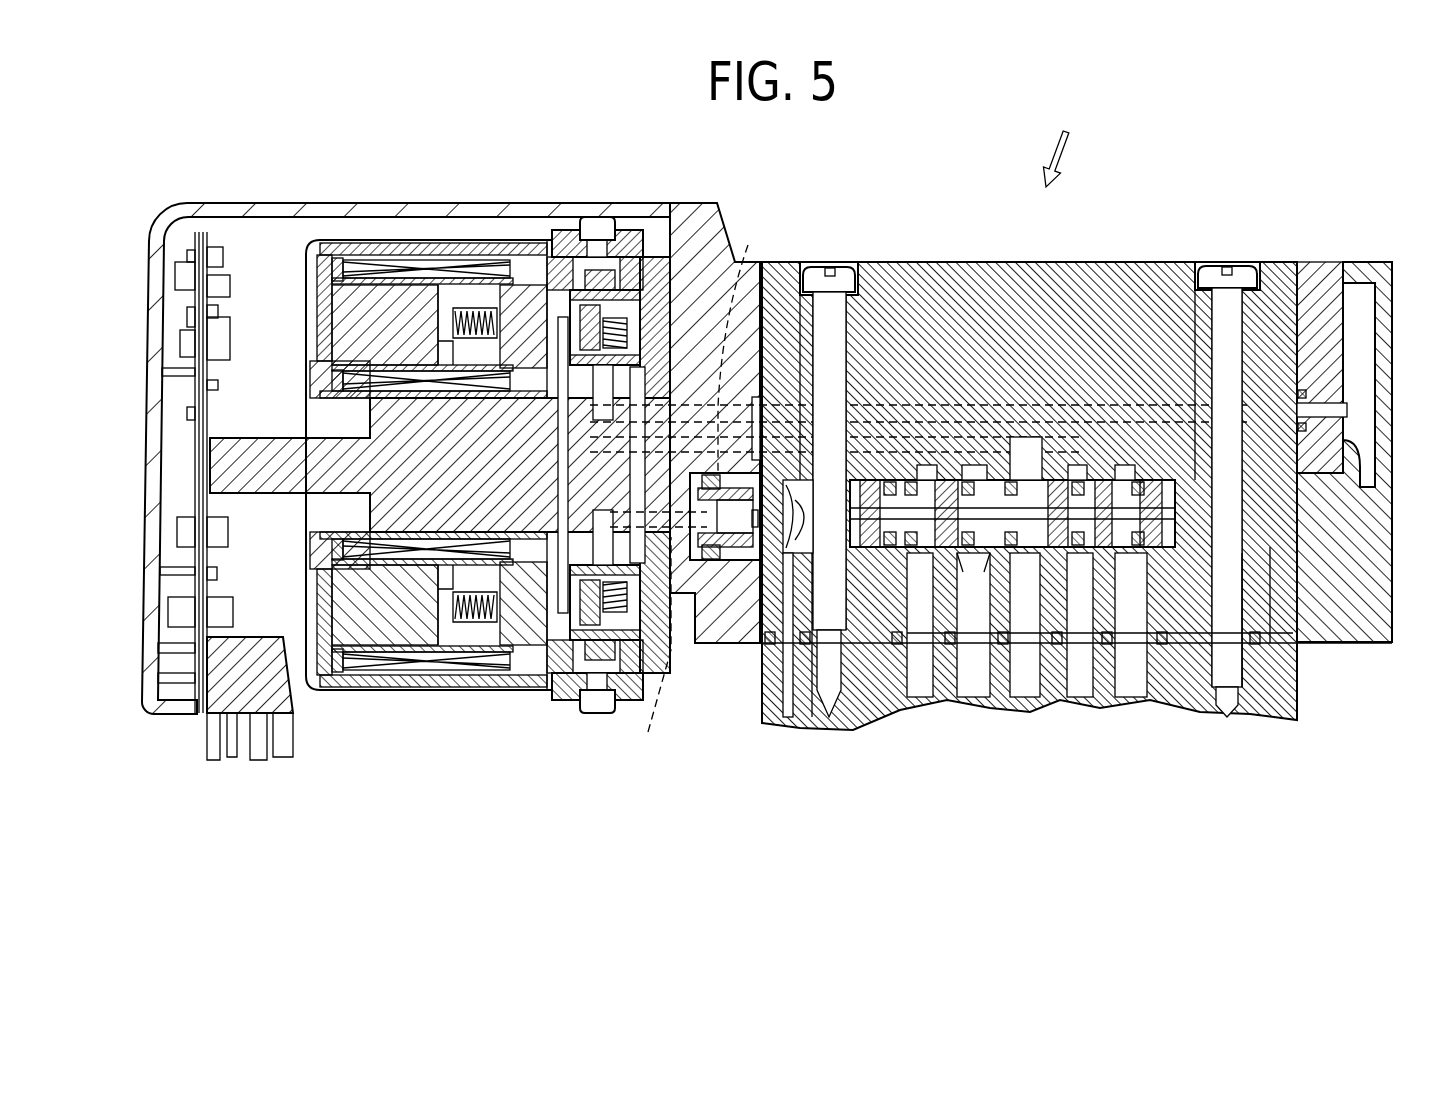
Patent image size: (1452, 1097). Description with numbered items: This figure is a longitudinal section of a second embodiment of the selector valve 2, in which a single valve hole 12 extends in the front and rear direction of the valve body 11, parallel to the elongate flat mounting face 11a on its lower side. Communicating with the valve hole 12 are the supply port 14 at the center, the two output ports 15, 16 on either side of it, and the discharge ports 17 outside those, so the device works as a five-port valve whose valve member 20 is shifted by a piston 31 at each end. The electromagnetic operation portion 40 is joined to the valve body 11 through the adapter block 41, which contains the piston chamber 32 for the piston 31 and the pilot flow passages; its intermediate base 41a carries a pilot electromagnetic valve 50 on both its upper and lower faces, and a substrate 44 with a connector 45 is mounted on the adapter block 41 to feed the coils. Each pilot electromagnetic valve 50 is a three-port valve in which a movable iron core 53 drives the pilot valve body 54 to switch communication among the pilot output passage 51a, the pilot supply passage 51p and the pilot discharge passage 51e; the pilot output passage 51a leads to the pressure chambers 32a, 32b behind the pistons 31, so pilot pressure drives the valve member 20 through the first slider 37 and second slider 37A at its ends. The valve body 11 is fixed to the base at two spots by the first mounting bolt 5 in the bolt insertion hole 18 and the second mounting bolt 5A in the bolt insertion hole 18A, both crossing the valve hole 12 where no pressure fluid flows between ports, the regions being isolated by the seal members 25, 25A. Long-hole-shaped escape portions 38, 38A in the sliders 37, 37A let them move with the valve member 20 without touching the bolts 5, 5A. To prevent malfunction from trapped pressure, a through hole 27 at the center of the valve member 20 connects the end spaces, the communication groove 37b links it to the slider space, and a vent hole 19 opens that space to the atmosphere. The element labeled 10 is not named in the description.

The selector valve 2 is at (1060, 143).
The first mounting bolt 5 is at (830, 323).
The second mounting bolt 5A is at (1232, 297).
The valve unit 10 is at (1017, 485).
The valve body 11 is at (1010, 262).
The mounting face 11a is at (1277, 645).
The valve hole 12 is at (982, 600).
The supply port 14 is at (1023, 615).
The output port 15 is at (975, 660).
The output port 16 is at (1077, 610).
The discharge port 17 is at (925, 600).
The bolt insertion hole 18 is at (840, 350).
The bolt insertion hole 18A is at (1212, 325).
The vent hole 19 is at (757, 645).
The valve member 20 is at (940, 473).
The seal member 25 is at (880, 532).
The seal member 25A is at (1140, 567).
The through hole 27 is at (1058, 515).
The piston 31 is at (713, 558).
The piston chamber 32 is at (1353, 477).
The pressure chamber 32a is at (700, 600).
The pressure chamber 32b is at (1348, 525).
The first slider 37 is at (742, 562).
The second slider 37A is at (1263, 533).
The communication groove 37b is at (808, 560).
The escape portion 38 is at (793, 265).
The escape portion 38A is at (1192, 517).
The electromagnetic operation portion 40 is at (492, 190).
The adapter block 41 is at (717, 213).
The intermediate base 41a is at (462, 605).
The substrate 44 is at (207, 405).
The connector 45 is at (265, 757).
The pilot electromagnetic valve 50 is at (384, 233).
The pilot output passage 51a is at (696, 488).
The pilot discharge passage 51e is at (632, 478).
The pilot supply passage 51p is at (558, 460).
The movable iron core 53 is at (523, 320).
The pilot valve body 54 is at (594, 325).